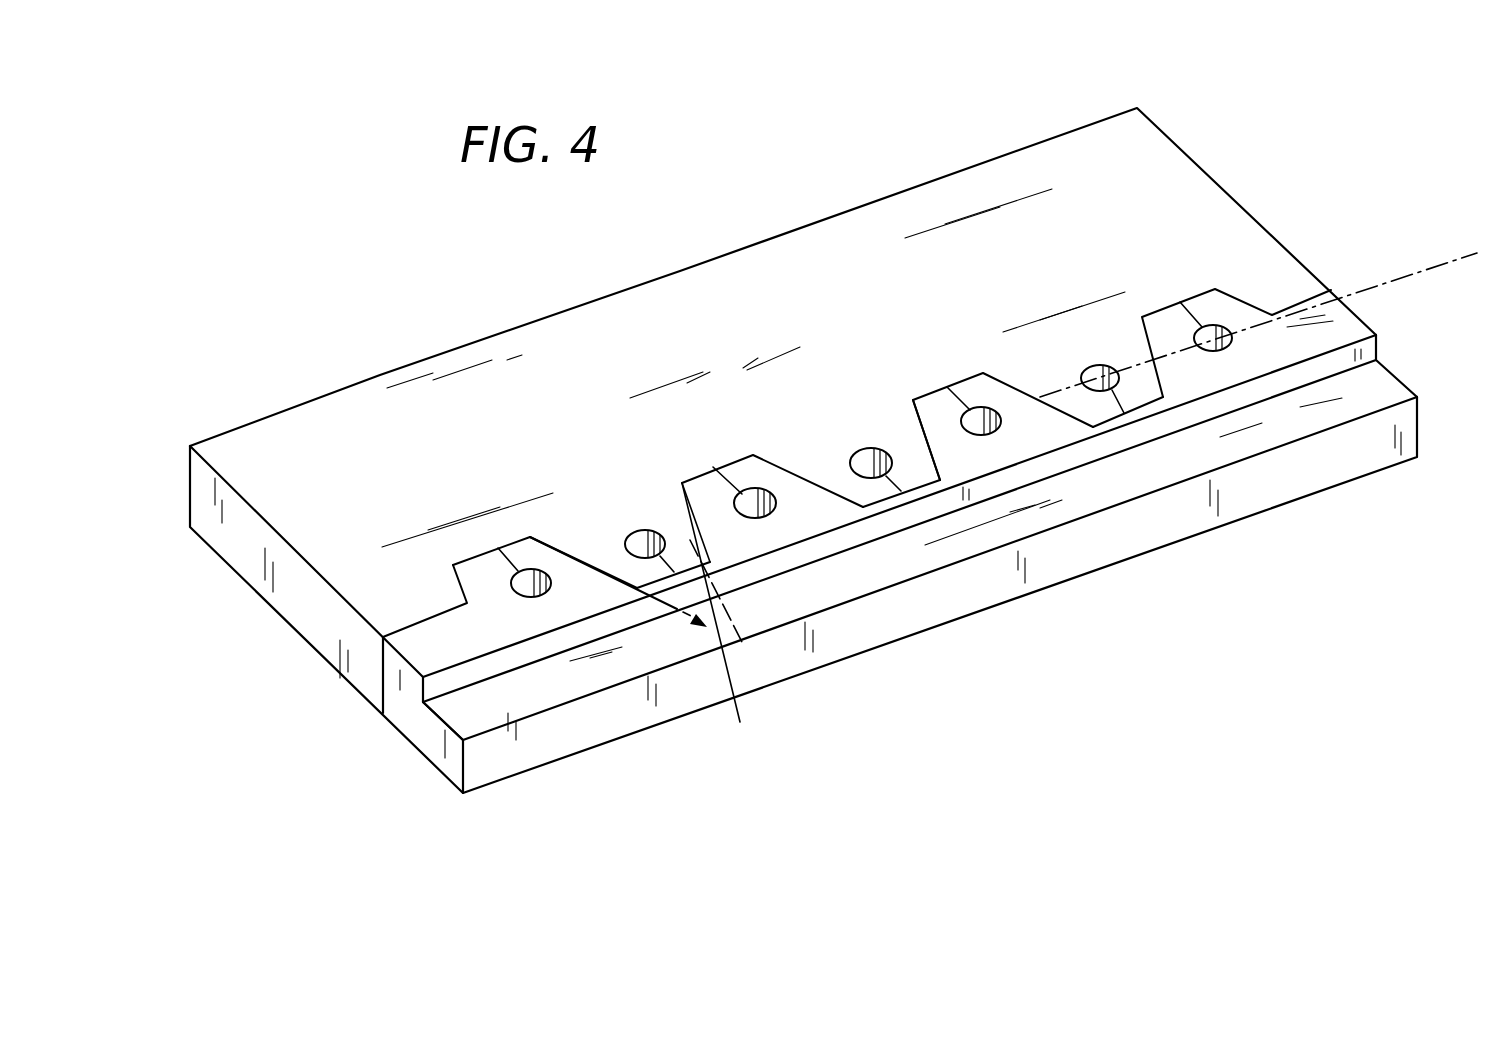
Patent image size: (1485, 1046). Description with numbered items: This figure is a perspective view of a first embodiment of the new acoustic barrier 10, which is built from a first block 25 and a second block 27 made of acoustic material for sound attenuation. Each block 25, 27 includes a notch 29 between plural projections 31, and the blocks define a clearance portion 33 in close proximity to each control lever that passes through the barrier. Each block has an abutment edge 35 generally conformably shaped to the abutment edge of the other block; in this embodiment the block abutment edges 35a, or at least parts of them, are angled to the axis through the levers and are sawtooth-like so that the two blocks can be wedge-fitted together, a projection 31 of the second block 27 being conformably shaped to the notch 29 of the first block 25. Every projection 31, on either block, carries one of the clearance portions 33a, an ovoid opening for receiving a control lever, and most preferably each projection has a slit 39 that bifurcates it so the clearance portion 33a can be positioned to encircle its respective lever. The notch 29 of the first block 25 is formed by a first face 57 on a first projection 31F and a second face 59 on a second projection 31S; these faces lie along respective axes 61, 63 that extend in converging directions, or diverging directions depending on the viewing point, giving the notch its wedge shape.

The barrier 10 is at (913, 130).
The first block 25 is at (417, 727).
The second block 27 is at (313, 627).
The notch 29 is at (833, 380).
The projection 31 is at (915, 470).
The first projection 31F is at (527, 542).
The second projection 31S is at (703, 483).
The clearance portion 33 is at (502, 610).
The clearance portion 33a is at (1012, 360).
The abutment edge 35 is at (1178, 282).
The block abutment edge 35a is at (918, 432).
The slit 39 is at (454, 586).
The first face 57 is at (560, 547).
The second face 59 is at (692, 520).
The axis 61 is at (690, 632).
The axis 63 is at (733, 630).